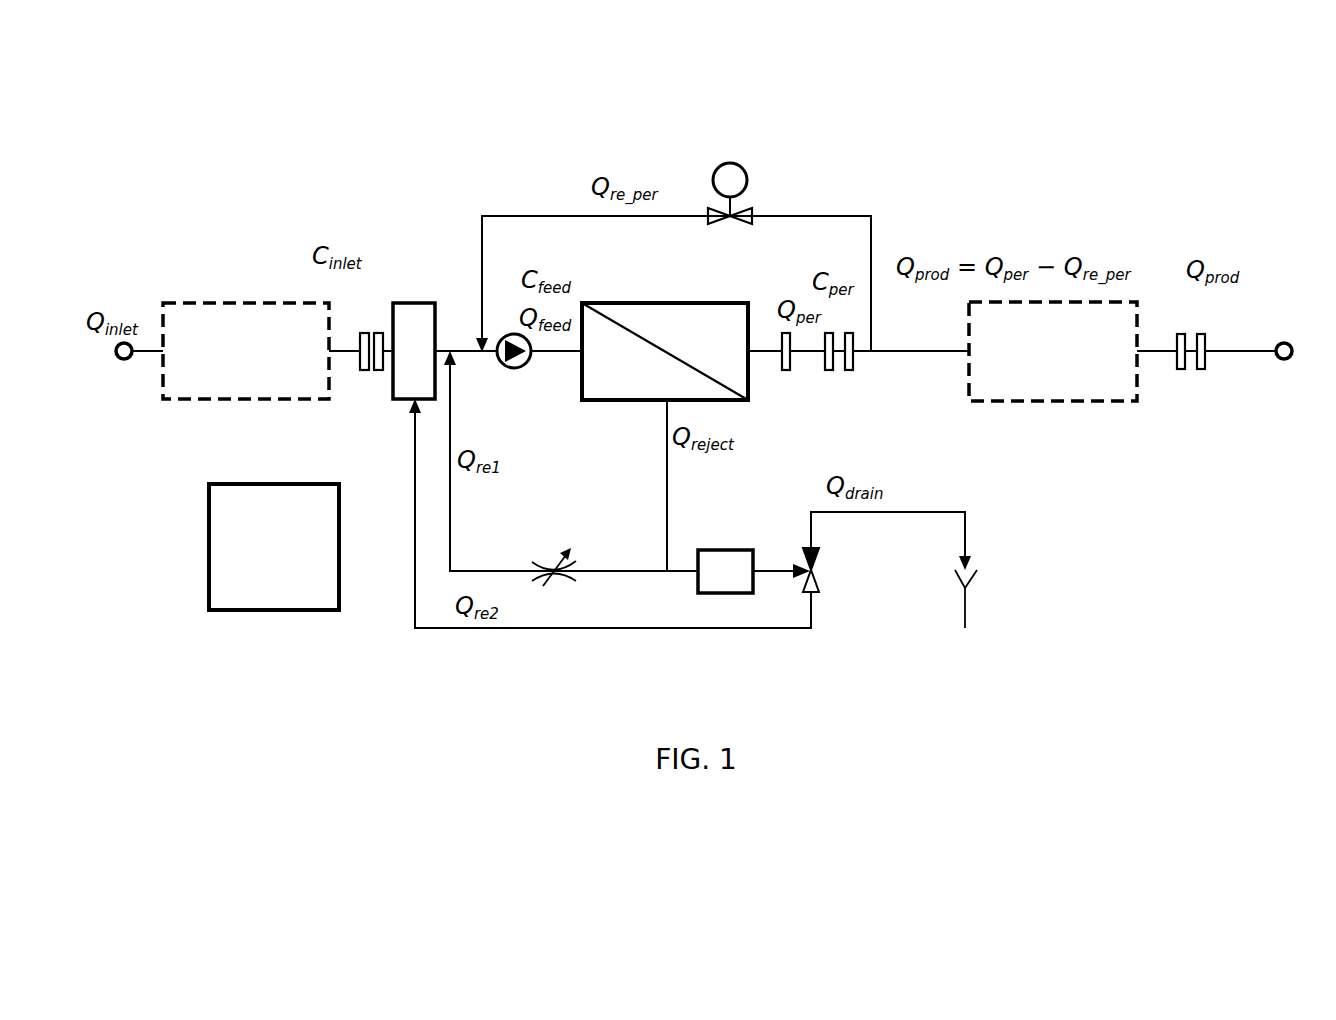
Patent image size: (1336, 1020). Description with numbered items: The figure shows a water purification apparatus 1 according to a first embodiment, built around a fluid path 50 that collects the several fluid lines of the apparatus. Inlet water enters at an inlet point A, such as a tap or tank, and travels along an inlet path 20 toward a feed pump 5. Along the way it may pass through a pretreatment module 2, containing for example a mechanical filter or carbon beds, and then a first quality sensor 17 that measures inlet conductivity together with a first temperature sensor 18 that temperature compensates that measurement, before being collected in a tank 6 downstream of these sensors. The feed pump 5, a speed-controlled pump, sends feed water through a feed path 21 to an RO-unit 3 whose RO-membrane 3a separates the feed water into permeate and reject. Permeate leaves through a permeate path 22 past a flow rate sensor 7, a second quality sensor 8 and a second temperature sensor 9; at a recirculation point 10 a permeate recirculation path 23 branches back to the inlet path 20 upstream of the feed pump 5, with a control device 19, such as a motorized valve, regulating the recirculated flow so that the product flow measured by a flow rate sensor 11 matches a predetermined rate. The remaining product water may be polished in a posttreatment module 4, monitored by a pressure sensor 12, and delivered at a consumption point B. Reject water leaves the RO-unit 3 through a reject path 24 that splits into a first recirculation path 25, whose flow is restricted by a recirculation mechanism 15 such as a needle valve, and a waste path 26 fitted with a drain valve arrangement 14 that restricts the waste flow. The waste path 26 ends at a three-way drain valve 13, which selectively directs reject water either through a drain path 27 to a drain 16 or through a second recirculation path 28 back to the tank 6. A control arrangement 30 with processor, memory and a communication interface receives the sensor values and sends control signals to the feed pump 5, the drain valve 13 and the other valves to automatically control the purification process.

The water purification apparatus 1 is at (450, 169).
The fluid path 50 is at (443, 229).
The pretreatment module 2 is at (213, 303).
The RO-unit 3 is at (665, 316).
The RO-membrane 3a is at (627, 328).
The posttreatment module 4 is at (1075, 401).
The feed pump 5 is at (528, 370).
The tank 6 is at (416, 303).
The flow rate sensor 7 is at (788, 370).
The second quality sensor 8 is at (829, 370).
The second temperature sensor 9 is at (850, 370).
The recirculation point 10 is at (882, 364).
The flow rate sensor 11 is at (1181, 370).
The pressure sensor 12 is at (1202, 370).
The drain valve 13 is at (806, 552).
The drain valve arrangement 14 is at (731, 550).
The recirculation mechanism 15 is at (545, 568).
The drain 16 is at (970, 584).
The first quality sensor 17 is at (365, 333).
The first temperature sensor 18 is at (381, 333).
The control device 19 is at (752, 210).
The inlet path 20 is at (341, 353).
The feed path 21 is at (547, 353).
The permeate path 22 is at (768, 350).
The permeate recirculation path 23 is at (836, 216).
The reject path 24 is at (665, 481).
The first recirculation path 25 is at (627, 568).
The waste path 26 is at (677, 572).
The drain path 27 is at (898, 512).
The second recirculation path 28 is at (652, 628).
The control arrangement 30 is at (274, 547).
The inlet point A is at (122, 362).
The consumption point B is at (1286, 362).